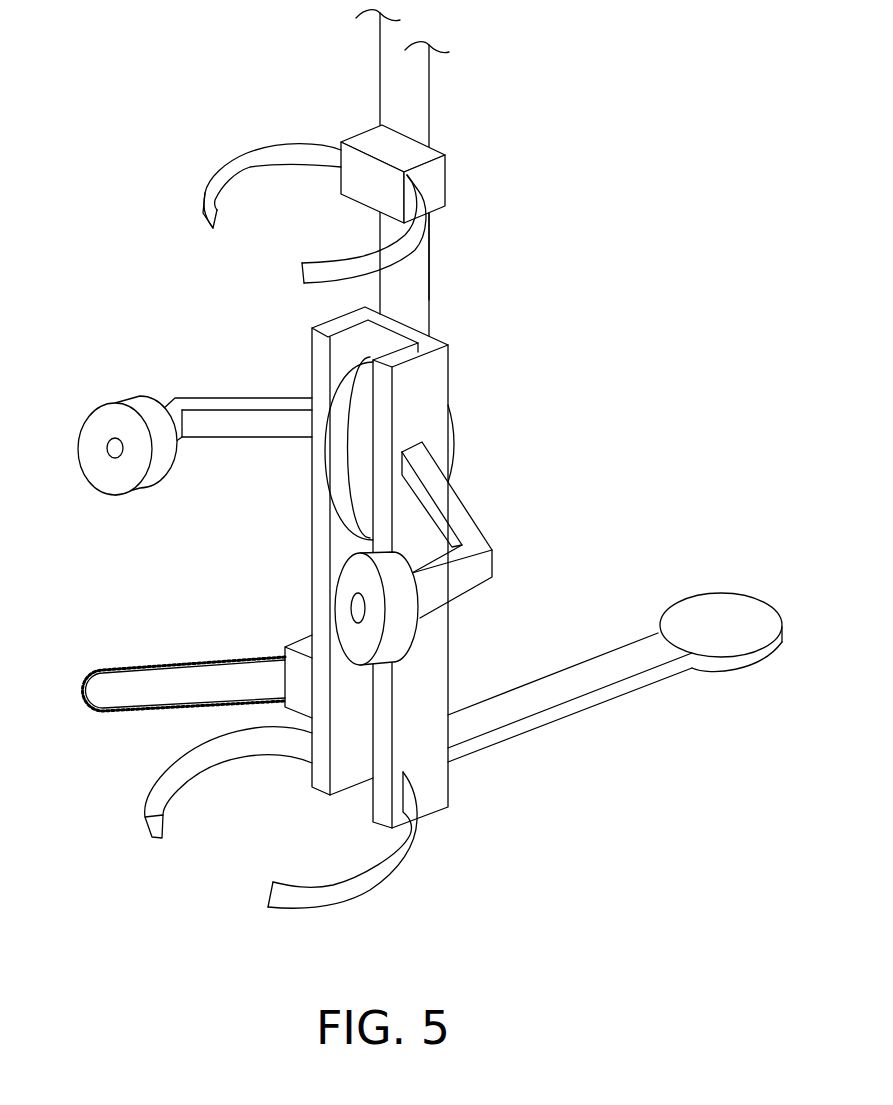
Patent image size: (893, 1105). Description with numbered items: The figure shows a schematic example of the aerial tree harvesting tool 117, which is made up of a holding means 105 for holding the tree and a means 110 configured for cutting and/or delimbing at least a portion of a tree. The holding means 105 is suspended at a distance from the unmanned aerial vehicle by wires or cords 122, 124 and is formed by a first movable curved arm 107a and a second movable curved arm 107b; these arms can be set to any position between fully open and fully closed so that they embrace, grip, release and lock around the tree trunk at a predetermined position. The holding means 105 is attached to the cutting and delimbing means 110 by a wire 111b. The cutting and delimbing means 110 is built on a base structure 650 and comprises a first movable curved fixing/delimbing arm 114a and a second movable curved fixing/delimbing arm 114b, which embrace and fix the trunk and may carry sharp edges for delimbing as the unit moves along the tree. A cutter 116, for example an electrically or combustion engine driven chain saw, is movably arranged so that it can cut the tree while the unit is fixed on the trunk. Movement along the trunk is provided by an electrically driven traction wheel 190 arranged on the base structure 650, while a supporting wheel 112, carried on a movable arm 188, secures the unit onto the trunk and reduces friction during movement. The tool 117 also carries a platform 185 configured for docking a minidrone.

The tree harvesting tool 117 is at (650, 41).
The wire/cord 124 is at (380, 73).
The wire/cord 122 is at (430, 100).
The holding means 105 is at (430, 183).
The wire 111b is at (430, 247).
The second movable curved arm 107b is at (247, 160).
The first movable curved arm 107a is at (383, 263).
The base structure 650 is at (427, 783).
The electrically driven wheel 190 is at (352, 400).
The means configured for cutting and/or delimbing at least a portion of a tree 110 is at (470, 432).
The arm 188 is at (457, 515).
The supporting wheel 112 is at (400, 635).
The cutter 116 is at (177, 686).
The platform 185 is at (568, 685).
The second movable curved fixing/delimbing arm 114b is at (153, 815).
The first movable curved fixing/delimbing arm 114a is at (357, 893).